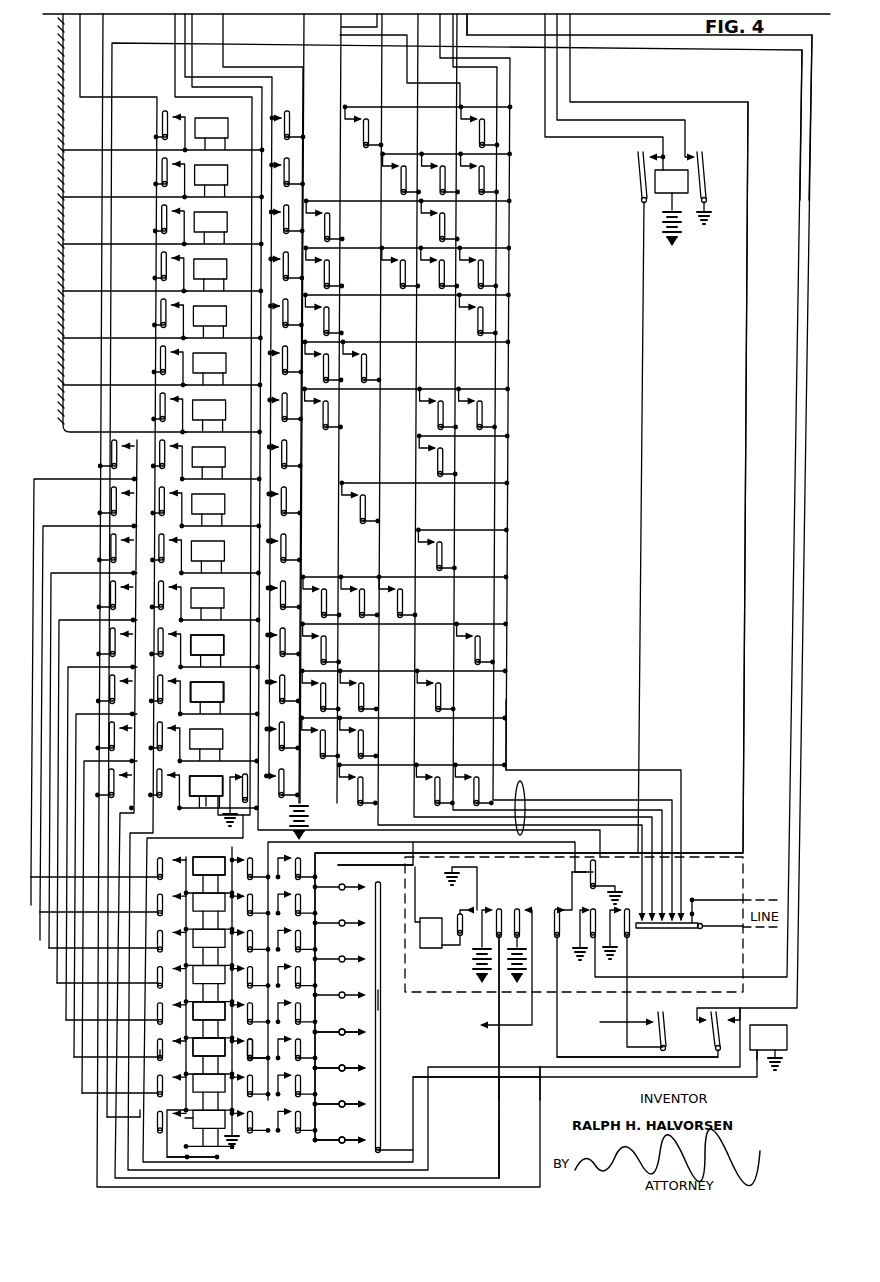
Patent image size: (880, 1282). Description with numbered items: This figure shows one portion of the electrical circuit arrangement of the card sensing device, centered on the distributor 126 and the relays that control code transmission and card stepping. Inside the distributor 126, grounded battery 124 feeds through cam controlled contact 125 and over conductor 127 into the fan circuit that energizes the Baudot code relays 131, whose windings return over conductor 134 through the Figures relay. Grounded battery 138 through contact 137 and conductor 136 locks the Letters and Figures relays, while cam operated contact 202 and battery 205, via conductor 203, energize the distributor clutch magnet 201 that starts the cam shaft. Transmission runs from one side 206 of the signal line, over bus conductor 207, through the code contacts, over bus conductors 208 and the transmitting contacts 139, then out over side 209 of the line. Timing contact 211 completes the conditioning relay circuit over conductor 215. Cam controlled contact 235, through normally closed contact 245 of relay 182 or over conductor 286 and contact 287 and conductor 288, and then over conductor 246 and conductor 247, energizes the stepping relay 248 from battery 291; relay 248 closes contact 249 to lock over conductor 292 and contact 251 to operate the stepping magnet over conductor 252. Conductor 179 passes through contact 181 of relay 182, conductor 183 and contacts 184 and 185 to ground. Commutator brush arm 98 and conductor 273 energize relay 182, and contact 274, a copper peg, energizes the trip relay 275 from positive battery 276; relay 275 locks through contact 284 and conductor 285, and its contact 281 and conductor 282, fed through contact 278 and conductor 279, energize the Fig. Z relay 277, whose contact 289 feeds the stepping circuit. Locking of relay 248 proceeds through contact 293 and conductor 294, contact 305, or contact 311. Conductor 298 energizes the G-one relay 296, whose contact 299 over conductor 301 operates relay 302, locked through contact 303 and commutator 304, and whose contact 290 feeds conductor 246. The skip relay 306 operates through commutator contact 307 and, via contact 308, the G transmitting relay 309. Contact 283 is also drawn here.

The conductor 246 is at (157, 44).
The conductor 134 is at (183, 77).
The conductor 136 is at (128, 100).
The conductor 298 is at (105, 182).
The conductor 215 is at (582, 52).
The conductor 179 is at (657, 40).
The conductor 252 is at (548, 140).
The conductor 247 is at (580, 125).
The contact of relay 248 249 is at (646, 156).
The contact of relay 248 251 is at (695, 150).
The stepping relay 248 is at (690, 222).
The battery 291 is at (680, 230).
The conductor 285 is at (748, 300).
The conductor 292 is at (640, 468).
The contact of relay 277 289 is at (108, 618).
The Fig. Z card code relay 277 is at (240, 632).
The G transmitting relay 309 is at (210, 698).
The relay contact 283 is at (329, 655).
The bus conductor 207 is at (508, 757).
The bus conductors 208 is at (526, 800).
The battery 205 is at (312, 822).
The contact of relay 296 299 is at (245, 773).
The G-1 relay 296 is at (206, 786).
The Baudot code relays 131 is at (205, 812).
The contact of relay 296 290 is at (146, 812).
The conductor 294 is at (240, 858).
The conductor 203 is at (368, 870).
The locking contact of relay 275 284 is at (312, 1020).
The contact 274 is at (370, 1030).
The commutator brush arm 98 is at (382, 1058).
The commutator contact 307 is at (365, 1075).
The commutator 304 is at (365, 1112).
The locking contact of relay 302 303 is at (305, 1140).
The contact of relay 302 305 is at (245, 1143).
The contact of relay 275 293 is at (253, 1042).
The contact of skip relay 306 311 is at (255, 1060).
The conductor 282 is at (60, 975).
The contact of relay 275 281 is at (155, 985).
The trip relay 275 is at (197, 1012).
The contact of skip relay 306 308 is at (160, 1047).
The skip relay 306 is at (197, 1050).
The conductor 301 is at (143, 1115).
The relay 302 is at (190, 1120).
The positive battery 276 is at (168, 1157).
The distributor 126 is at (743, 880).
The distributor clutch magnet 201 is at (432, 948).
The cam operated contact 202 is at (468, 905).
The grounded battery 138 is at (478, 965).
The contact 137 is at (494, 905).
The cam controlled contact 125 is at (528, 905).
The grounded battery 124 is at (525, 965).
The conductor 127 is at (525, 1032).
The contact 184 is at (572, 905).
The tape controlled contact 185 is at (575, 875).
The cam controlled contact 235 is at (620, 898).
The timing contact 211 is at (585, 895).
The conductor 286 is at (630, 955).
The transmitting contacts 139 is at (650, 932).
The side of the line 209 is at (725, 928).
The side of the signal line 206 is at (722, 912).
The normally closed contact of relay 182 245 is at (645, 1025).
The contact of relay 182 287 is at (670, 1030).
The contact of relay 182 181 is at (700, 1048).
The conductor 183 is at (608, 1057).
The contact of relay 182 278 is at (730, 1014).
The relay 182 is at (785, 1060).
The conductor 273 is at (418, 1080).
The conductor 279 is at (503, 1080).
The conductor 288 is at (540, 1108).